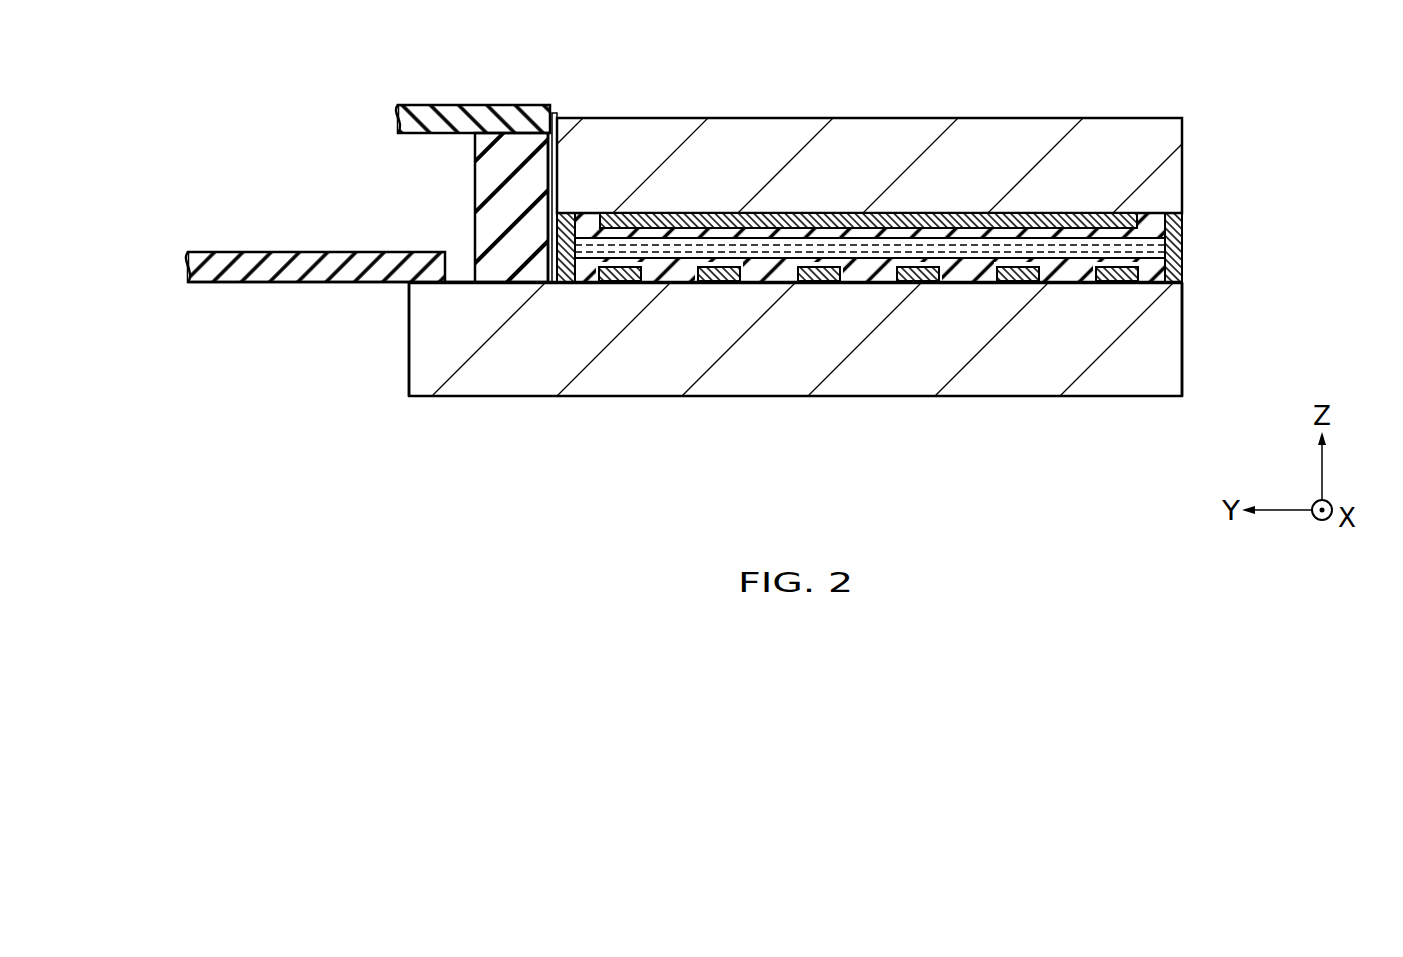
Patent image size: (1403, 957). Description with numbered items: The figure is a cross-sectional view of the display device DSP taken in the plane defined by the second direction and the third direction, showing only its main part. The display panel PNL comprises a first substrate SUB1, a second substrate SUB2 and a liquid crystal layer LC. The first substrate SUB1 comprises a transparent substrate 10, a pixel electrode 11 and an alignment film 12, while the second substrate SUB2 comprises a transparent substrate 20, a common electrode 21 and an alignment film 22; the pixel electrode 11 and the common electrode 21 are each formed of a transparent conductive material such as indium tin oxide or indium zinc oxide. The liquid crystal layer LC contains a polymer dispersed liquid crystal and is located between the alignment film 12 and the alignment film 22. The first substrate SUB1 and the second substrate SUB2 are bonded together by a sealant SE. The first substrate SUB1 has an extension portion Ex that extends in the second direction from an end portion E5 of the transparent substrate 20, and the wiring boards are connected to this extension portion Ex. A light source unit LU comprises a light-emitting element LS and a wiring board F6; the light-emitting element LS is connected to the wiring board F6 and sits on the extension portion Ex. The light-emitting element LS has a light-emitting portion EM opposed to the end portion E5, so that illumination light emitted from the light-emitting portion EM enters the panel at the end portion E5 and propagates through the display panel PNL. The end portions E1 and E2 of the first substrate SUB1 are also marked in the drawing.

The transparent substrate 10 is at (768, 388).
The pixel electrode 11 is at (613, 284).
The alignment film 12 is at (662, 284).
The transparent substrate 20 is at (900, 126).
The common electrode 21 is at (976, 232).
The alignment film 22 is at (1036, 222).
The display panel PNL is at (825, 252).
The display device DSP is at (784, 247).
The first substrate SUB1 is at (857, 378).
The second substrate SUB2 is at (896, 137).
The liquid crystal layer LC is at (1183, 246).
The sealant SE is at (1183, 274).
The first end portion of first substrate E1 is at (1183, 368).
The second end portion of first substrate E2 is at (408, 368).
The end portion E5 is at (544, 160).
The light-emitting portion EM is at (563, 187).
The extension portion Ex is at (460, 276).
The light-emitting element LS is at (478, 164).
The light source unit LU is at (473, 151).
The wiring board F6 is at (445, 108).